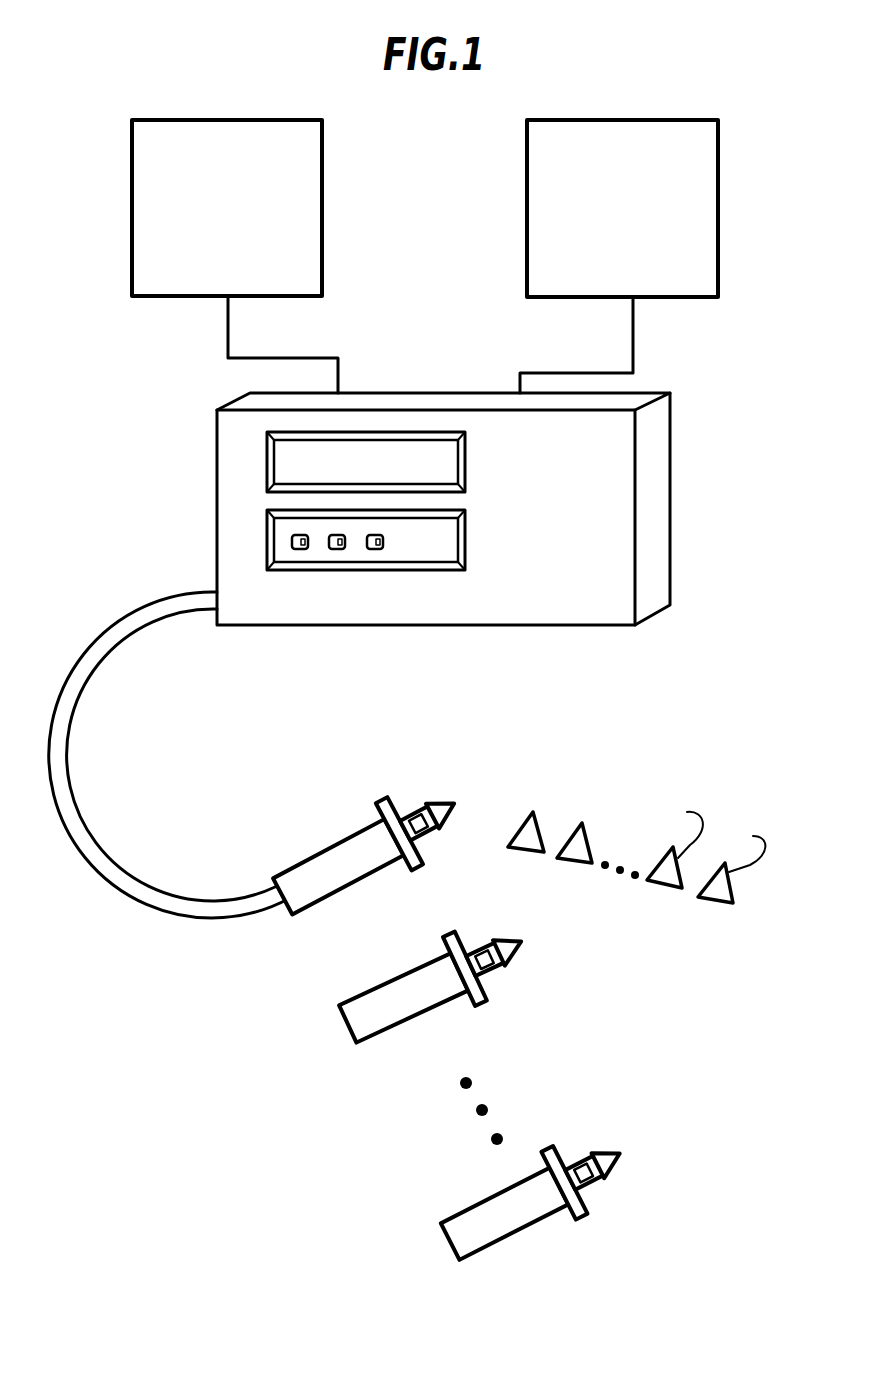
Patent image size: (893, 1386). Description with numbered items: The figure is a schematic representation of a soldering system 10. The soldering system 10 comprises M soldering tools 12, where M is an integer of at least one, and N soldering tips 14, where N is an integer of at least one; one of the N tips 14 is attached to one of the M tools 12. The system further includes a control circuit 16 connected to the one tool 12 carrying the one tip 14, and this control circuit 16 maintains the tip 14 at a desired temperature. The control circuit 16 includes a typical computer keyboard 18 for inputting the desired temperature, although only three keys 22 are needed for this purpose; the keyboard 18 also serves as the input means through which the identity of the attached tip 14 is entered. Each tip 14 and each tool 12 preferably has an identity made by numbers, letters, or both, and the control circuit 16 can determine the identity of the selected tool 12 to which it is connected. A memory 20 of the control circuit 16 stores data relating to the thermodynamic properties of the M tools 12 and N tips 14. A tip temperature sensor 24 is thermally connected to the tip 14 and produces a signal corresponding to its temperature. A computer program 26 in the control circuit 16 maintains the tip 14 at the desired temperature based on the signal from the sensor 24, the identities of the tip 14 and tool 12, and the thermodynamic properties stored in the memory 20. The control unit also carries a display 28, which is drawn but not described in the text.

The soldering system 10 is at (790, 705).
The soldering tools 12 is at (460, 1045).
The soldering tips 14 is at (656, 868).
The control circuit 16 is at (672, 513).
The computer keyboard 18 is at (415, 543).
The memory 20 is at (633, 120).
The keys 22 is at (375, 549).
The tip temperature sensor 24 is at (415, 818).
The computer program 26 is at (237, 120).
The display 28 is at (416, 465).